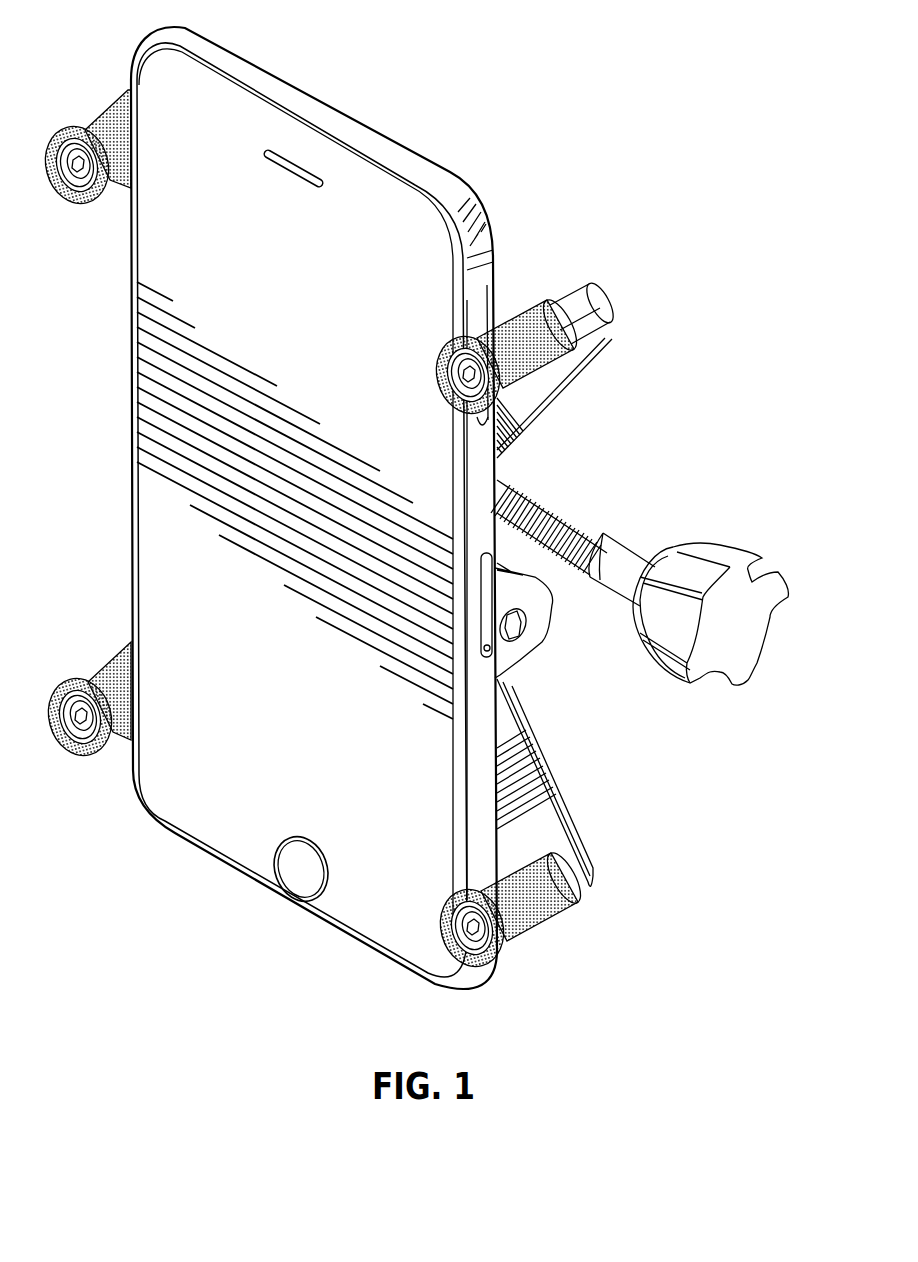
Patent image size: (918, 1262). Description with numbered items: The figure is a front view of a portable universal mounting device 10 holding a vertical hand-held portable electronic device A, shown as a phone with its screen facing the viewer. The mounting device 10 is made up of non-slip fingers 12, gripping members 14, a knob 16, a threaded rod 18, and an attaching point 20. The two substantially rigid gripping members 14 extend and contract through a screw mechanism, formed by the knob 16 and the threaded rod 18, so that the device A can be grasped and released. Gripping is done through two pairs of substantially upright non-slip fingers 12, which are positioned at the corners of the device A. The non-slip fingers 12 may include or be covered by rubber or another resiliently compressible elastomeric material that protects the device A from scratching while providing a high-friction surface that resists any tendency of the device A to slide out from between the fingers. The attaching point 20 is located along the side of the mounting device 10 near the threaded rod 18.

The portable universal mounting device 10 is at (405, 502).
The non-slip fingers 12 is at (93, 128).
The gripping members 14 is at (545, 397).
The knob 16 is at (750, 647).
The threaded rod 18 is at (573, 517).
The attaching point 20 is at (513, 630).
The vertical hand-held portable electronic device A is at (203, 465).